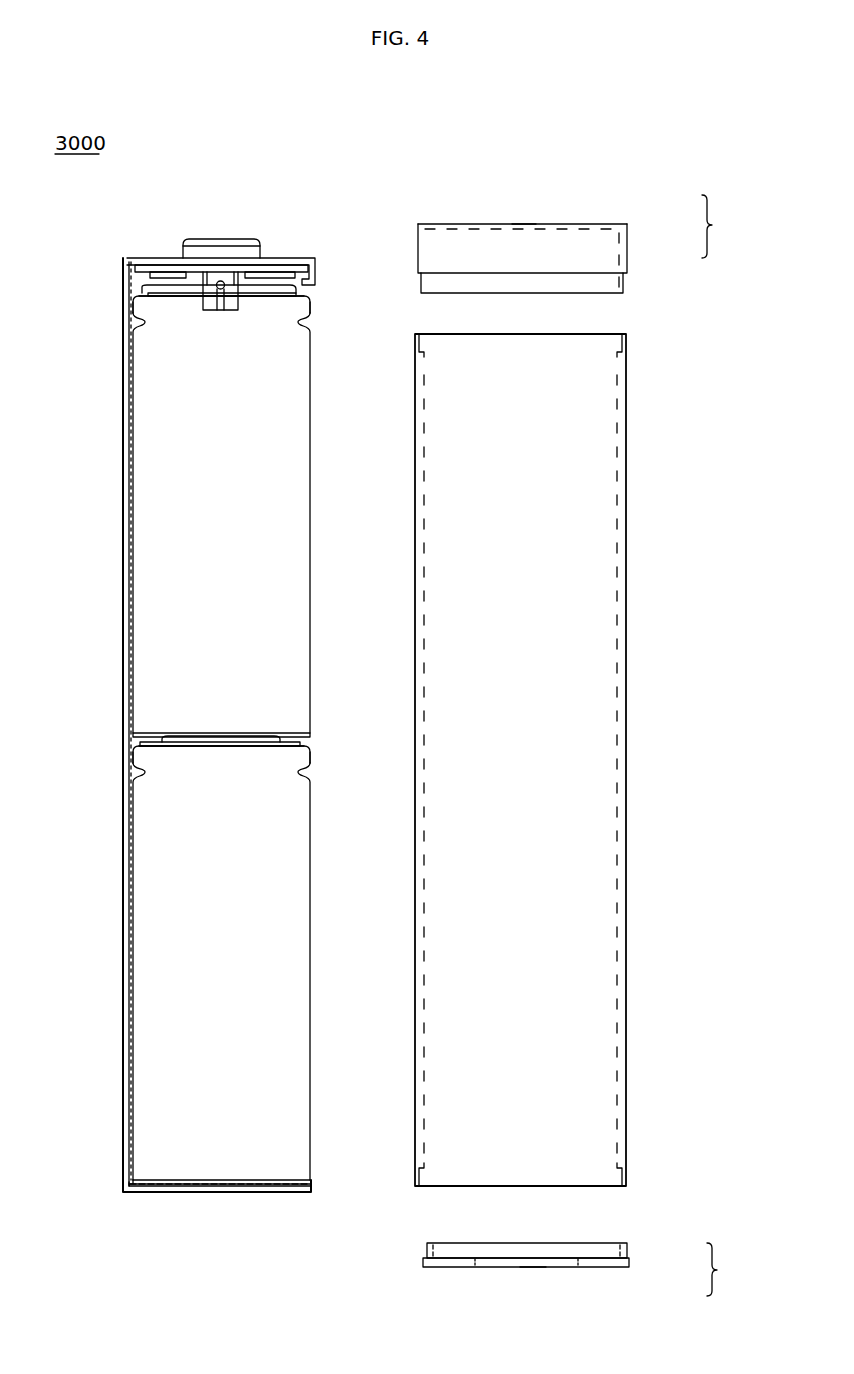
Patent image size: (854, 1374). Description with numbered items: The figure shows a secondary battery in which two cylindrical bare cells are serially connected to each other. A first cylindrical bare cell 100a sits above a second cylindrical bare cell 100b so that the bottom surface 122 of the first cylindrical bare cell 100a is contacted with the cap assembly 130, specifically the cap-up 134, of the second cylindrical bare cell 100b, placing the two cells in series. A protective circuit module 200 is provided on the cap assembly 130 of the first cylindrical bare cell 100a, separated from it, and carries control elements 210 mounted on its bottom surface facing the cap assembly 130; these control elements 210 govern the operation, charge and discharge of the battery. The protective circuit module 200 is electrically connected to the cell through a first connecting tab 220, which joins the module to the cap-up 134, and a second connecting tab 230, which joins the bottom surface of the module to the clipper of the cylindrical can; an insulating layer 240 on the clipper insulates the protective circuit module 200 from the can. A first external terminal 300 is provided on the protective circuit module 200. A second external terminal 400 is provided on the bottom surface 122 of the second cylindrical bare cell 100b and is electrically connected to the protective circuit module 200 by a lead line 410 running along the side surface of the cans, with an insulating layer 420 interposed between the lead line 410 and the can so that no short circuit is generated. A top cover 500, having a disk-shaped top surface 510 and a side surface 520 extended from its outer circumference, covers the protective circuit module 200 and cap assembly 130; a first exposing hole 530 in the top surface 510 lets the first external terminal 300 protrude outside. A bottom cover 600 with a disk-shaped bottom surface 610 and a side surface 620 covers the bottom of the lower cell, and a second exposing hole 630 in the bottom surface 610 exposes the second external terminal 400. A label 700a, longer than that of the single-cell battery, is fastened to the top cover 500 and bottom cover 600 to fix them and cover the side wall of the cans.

The first cylindrical bare cell 100a is at (313, 490).
The second cylindrical bare cell 100b is at (313, 935).
The bottom surface 122 is at (311, 736).
The cap assembly 130 is at (315, 302).
The cap-up 134 is at (160, 288).
The protective circuit module 200 is at (140, 262).
The control elements 210 is at (193, 273).
The first connecting tab 220 is at (316, 262).
The second connecting tab 230 is at (217, 275).
The insulating layer 240 is at (140, 297).
The first external terminal 300 is at (240, 242).
The second external terminal 400 is at (182, 754).
The lead line 410 is at (125, 386).
The insulating layer 420 is at (129, 450).
The top cover 500 is at (586, 224).
The top surface 510 is at (617, 221).
The side surface 520 is at (627, 248).
The first exposing hole 530 is at (523, 224).
The bottom cover 600 is at (591, 1289).
The bottom surface 610 is at (629, 1262).
The side surface 620 is at (629, 1245).
The second exposing hole 630 is at (533, 1277).
The label 700a is at (627, 490).